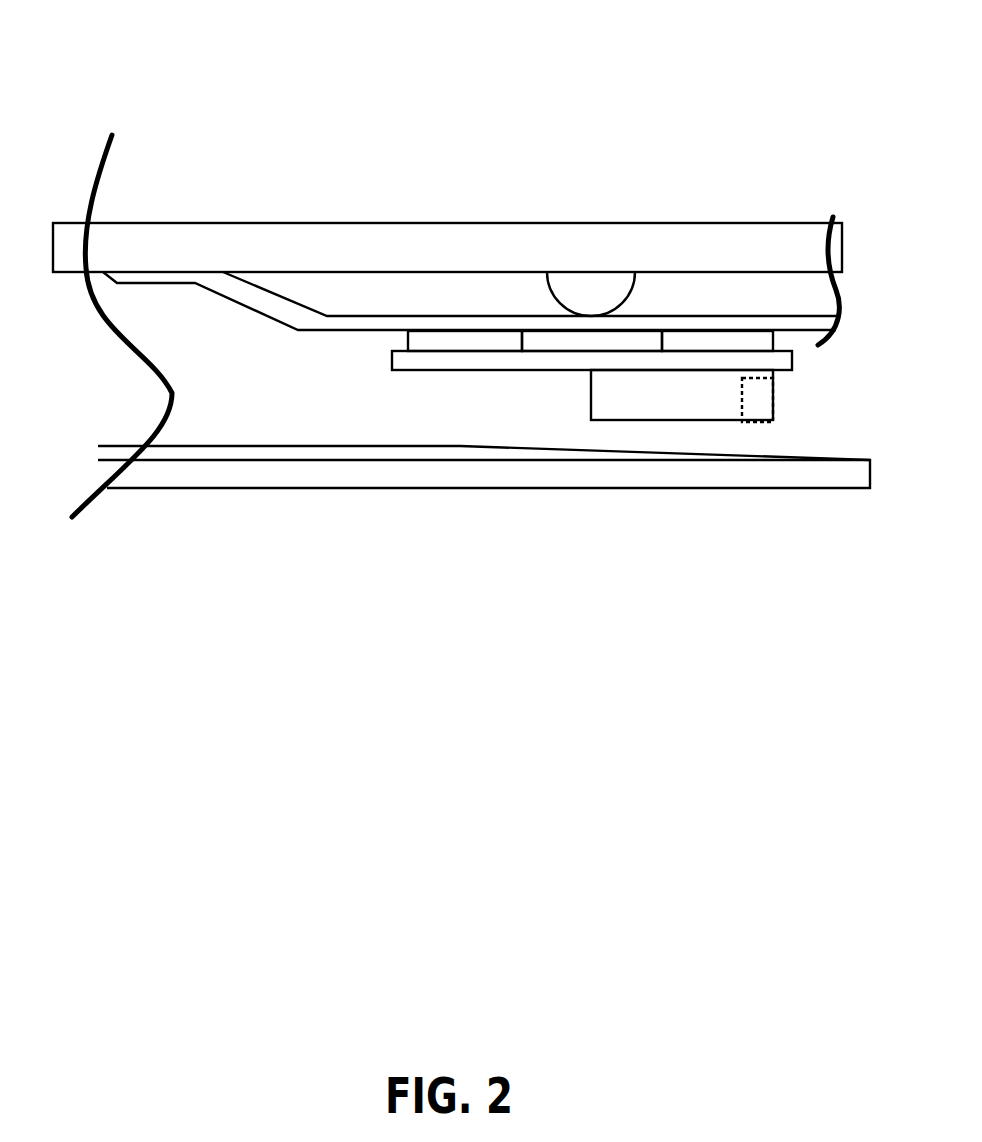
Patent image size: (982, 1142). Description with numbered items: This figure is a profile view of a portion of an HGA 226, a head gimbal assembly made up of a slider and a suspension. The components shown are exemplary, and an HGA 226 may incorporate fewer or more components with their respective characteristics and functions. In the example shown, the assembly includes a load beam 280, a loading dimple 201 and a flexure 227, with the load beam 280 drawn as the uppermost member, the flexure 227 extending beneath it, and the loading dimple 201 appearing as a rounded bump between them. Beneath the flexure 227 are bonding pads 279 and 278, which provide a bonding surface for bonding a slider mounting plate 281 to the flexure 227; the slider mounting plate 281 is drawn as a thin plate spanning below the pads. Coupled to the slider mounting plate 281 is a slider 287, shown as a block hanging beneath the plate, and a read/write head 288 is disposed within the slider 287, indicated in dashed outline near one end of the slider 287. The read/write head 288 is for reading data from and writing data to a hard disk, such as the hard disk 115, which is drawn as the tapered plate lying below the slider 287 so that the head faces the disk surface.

The HGA 226 is at (473, 27).
The load beam 280 is at (320, 252).
The flexure 227 is at (272, 310).
The loading dimple 201 is at (582, 287).
The bonding pad 279 is at (448, 318).
The bonding pad 278 is at (717, 318).
The slider mounting plate 281 is at (772, 360).
The slider 287 is at (618, 397).
The read/write head 288 is at (758, 397).
The hard disk 115 is at (598, 477).